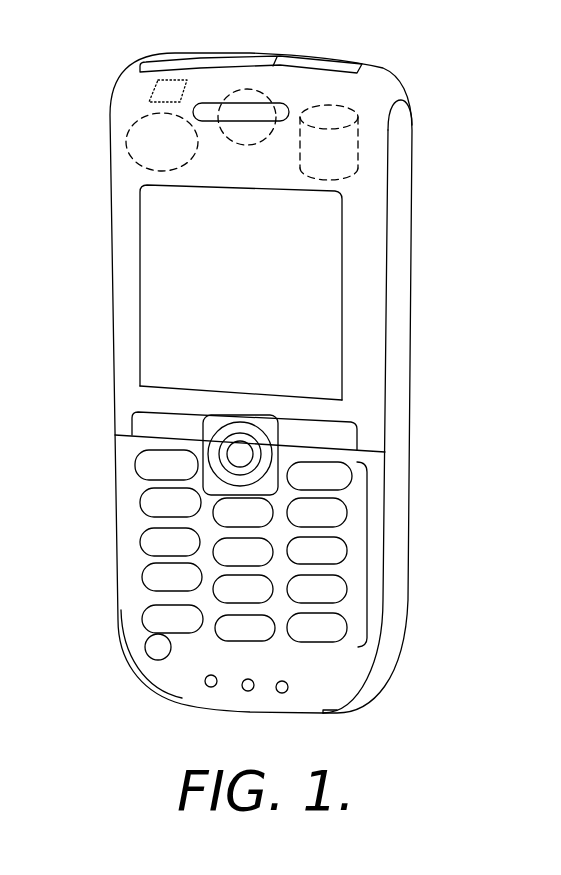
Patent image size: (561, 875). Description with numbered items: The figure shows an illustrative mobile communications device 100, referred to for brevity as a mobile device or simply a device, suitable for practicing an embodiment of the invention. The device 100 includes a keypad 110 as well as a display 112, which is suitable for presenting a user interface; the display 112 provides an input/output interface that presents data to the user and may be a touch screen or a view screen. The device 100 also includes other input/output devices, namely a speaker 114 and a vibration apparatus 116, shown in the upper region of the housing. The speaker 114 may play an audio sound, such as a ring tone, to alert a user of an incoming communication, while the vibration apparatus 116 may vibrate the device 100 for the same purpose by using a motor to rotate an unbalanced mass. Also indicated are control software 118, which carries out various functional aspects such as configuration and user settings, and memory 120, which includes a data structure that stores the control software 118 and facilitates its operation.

The mobile communications device 100 is at (117, 517).
The keypad 110 is at (367, 555).
The display 112 is at (157, 283).
The speaker 114 is at (247, 90).
The vibration apparatus 116 is at (358, 143).
The control software 118 is at (125, 140).
The memory 120 is at (168, 80).